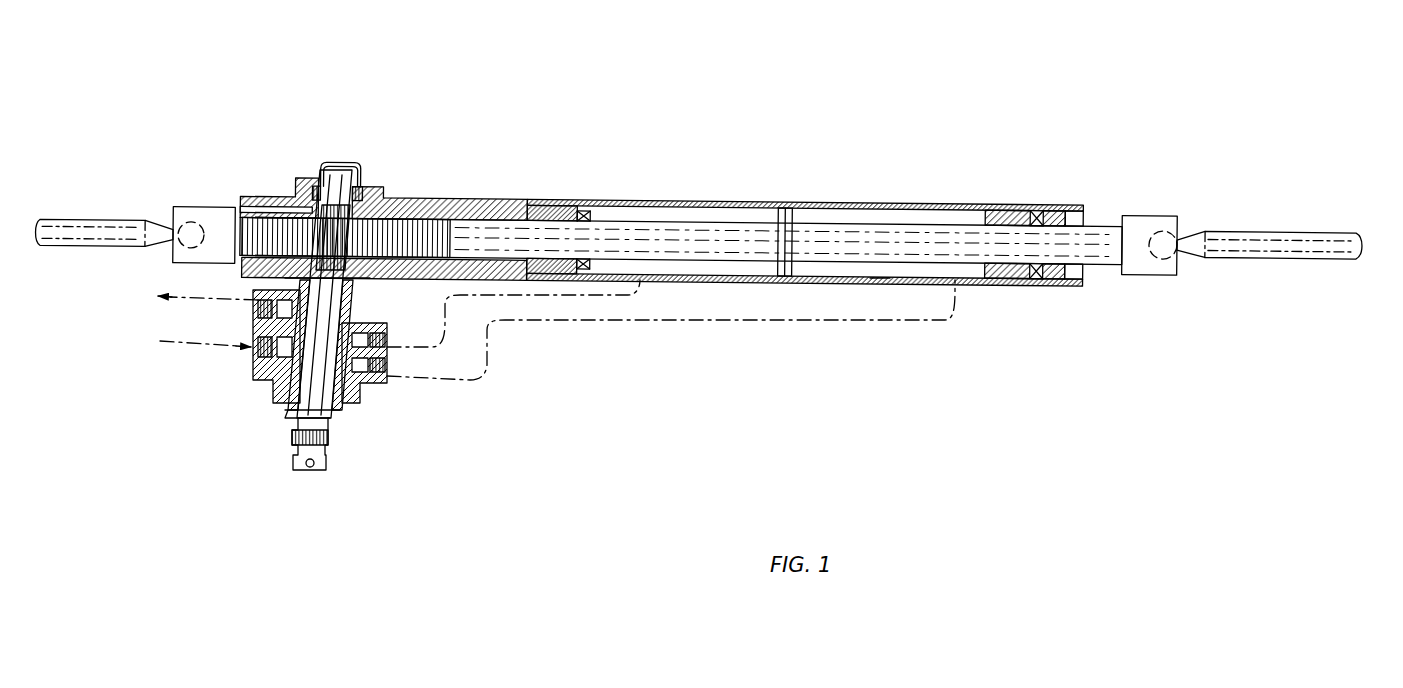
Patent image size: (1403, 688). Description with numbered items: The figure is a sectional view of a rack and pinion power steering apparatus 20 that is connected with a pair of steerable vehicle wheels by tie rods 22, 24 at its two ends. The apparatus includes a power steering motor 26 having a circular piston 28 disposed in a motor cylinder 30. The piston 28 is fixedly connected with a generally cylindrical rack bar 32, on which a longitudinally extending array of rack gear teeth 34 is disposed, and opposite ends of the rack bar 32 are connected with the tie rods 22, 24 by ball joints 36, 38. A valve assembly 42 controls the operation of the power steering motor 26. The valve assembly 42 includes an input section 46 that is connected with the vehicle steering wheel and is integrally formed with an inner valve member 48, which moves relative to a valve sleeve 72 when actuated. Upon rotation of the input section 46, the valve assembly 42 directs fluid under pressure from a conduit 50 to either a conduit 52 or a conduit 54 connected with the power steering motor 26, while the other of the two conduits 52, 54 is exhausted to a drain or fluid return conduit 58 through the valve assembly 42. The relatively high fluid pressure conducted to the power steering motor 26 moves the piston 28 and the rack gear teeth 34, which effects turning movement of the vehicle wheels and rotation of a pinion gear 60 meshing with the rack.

The power steering apparatus 20 is at (782, 56).
The tie rod 22 is at (78, 222).
The tie rod 24 is at (1335, 197).
The power steering motor 26 is at (905, 197).
The circular piston 28 is at (786, 222).
The motor cylinder 30 is at (880, 278).
The rack bar 32 is at (656, 236).
The rack gear teeth 34 is at (442, 197).
The ball joint 36 is at (197, 208).
The ball joint 38 is at (1147, 218).
The valve assembly 42 is at (248, 400).
The input section 46 is at (325, 458).
The inner valve member 48 is at (325, 330).
The conduit 50 is at (156, 341).
The conduit 52 is at (600, 295).
The conduit 54 is at (487, 375).
The fluid return conduit 58 is at (165, 306).
The pinion gear 60 is at (330, 208).
The valve sleeve 72 is at (355, 382).